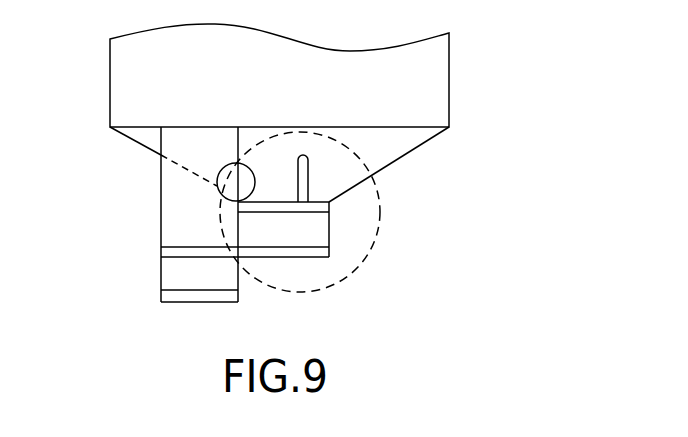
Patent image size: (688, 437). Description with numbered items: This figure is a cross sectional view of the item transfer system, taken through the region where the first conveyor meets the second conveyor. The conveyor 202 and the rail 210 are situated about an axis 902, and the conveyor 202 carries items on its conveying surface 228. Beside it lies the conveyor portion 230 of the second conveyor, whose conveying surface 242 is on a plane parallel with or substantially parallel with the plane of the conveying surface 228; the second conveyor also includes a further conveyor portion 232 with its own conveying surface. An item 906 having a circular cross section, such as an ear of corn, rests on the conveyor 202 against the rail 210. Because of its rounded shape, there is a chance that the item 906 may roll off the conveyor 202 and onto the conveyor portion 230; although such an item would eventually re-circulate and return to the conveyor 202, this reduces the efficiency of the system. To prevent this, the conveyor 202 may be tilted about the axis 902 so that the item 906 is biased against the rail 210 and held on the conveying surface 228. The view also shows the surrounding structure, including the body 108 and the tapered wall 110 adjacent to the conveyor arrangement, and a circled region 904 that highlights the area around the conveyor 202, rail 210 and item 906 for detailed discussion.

The housing body 108 is at (449, 75).
The tapered wall 110 is at (423, 143).
The conveyor 202 is at (329, 228).
The rail 210 is at (308, 178).
The conveying surface 228 is at (265, 202).
The conveyor portion 230 is at (161, 276).
The conveyor portion 232 is at (161, 186).
The conveying surface 242 is at (178, 247).
The axis 902 is at (282, 228).
The detail region 904 is at (353, 272).
The item 906 is at (243, 165).